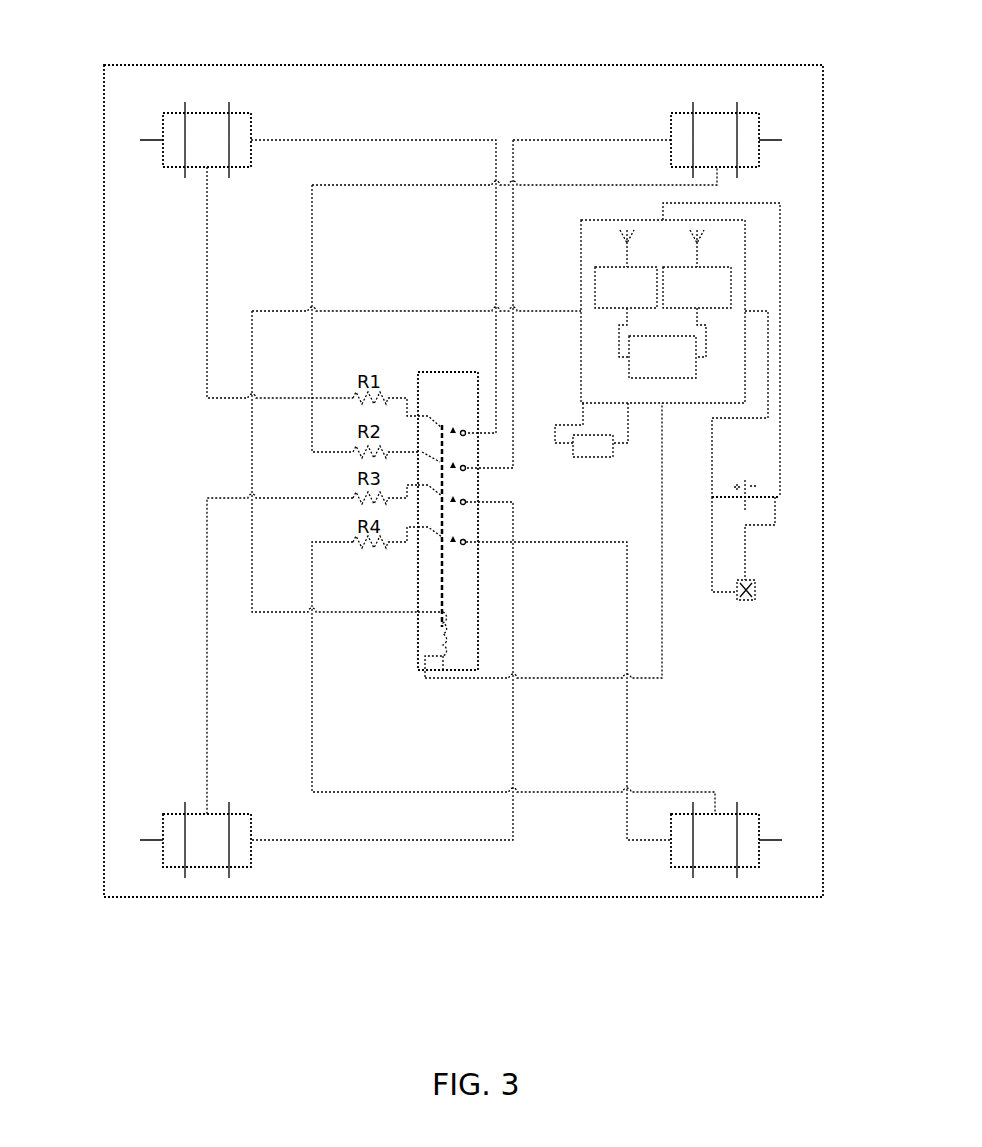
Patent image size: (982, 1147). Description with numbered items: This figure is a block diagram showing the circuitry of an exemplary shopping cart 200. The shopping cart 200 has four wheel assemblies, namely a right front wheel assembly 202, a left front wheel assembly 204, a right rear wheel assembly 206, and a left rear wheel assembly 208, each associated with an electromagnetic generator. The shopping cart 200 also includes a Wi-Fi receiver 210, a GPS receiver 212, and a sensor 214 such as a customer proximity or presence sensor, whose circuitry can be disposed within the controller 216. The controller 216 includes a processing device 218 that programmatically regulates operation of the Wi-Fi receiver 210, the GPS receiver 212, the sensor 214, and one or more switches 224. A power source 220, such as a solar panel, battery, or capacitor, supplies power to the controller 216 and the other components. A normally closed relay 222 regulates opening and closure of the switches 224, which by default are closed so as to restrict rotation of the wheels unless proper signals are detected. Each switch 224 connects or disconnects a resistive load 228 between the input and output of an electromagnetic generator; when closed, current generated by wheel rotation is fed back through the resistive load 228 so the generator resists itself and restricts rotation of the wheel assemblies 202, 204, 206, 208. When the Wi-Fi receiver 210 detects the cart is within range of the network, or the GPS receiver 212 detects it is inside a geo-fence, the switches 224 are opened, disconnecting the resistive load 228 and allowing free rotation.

The shopping cart 200 is at (561, 63).
The right front wheel assembly 202 is at (715, 112).
The left front wheel assembly 204 is at (163, 120).
The right rear wheel assembly 206 is at (759, 820).
The left rear wheel assembly 208 is at (163, 822).
The Wi-Fi receiver 210 is at (731, 288).
The GPS receiver 212 is at (640, 267).
The sensor 214 is at (595, 435).
The controller 216 is at (745, 245).
The processing device 218 is at (696, 368).
The power source 220 is at (755, 590).
The normally closed relay 222 is at (266, 483).
The switches 224 is at (424, 467).
The resistive load 228 is at (353, 542).